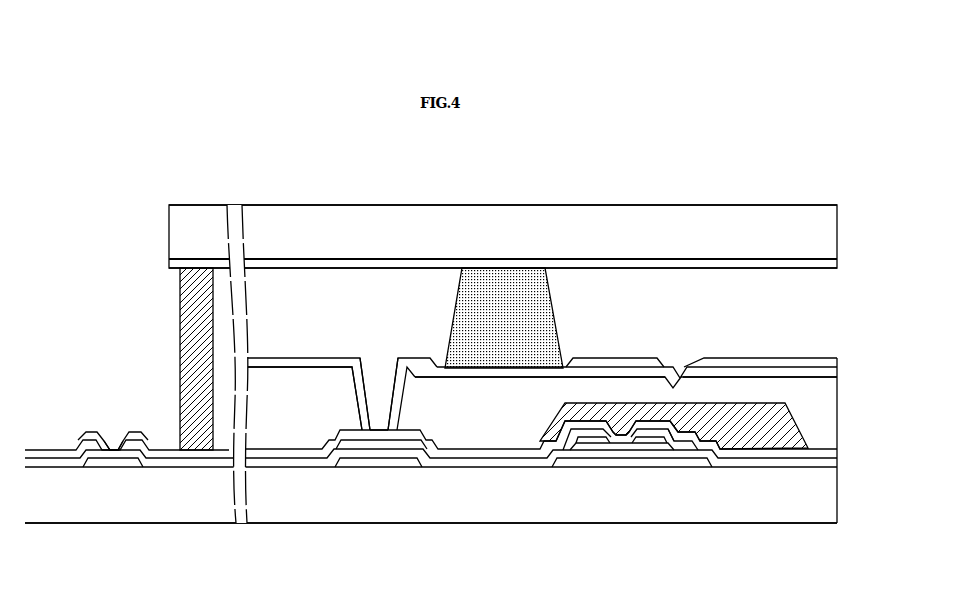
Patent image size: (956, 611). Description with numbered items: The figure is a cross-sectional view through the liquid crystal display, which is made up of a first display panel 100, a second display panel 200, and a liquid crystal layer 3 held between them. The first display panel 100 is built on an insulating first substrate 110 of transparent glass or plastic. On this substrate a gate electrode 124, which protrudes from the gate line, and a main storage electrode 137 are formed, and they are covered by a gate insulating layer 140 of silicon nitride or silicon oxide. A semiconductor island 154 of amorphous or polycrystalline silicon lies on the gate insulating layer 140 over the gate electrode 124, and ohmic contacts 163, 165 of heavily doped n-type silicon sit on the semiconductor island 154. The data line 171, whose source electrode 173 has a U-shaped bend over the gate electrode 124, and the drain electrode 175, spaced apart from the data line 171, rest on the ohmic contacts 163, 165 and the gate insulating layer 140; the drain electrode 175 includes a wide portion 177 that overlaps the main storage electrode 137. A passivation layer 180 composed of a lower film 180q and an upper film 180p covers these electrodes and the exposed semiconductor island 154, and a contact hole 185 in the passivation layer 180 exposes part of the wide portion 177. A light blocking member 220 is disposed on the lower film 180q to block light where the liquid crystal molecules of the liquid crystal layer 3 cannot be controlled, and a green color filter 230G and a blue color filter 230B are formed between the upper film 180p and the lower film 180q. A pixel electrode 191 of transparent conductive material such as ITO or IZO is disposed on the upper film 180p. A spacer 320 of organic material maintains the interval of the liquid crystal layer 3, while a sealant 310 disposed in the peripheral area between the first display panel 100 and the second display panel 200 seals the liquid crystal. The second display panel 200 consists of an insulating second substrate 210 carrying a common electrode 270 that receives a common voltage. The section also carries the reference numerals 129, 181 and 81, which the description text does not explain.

The liquid crystal layer 3 is at (842, 270).
The contact assistant 81 is at (134, 436).
The first display panel 100 is at (842, 520).
The insulating first substrate 110 is at (288, 500).
The gate electrode 124 is at (596, 461).
The gate pad 129 is at (113, 465).
The main storage electrode 137 is at (353, 462).
The gate insulating layer 140 is at (467, 459).
The semiconductor island 154 is at (609, 442).
The ohmic contact 163 is at (624, 437).
The ohmic contact 165 is at (580, 438).
The data line 171 is at (680, 441).
The source electrode 173 is at (643, 431).
The drain electrode 175 is at (568, 436).
The wide portion 177 is at (398, 443).
The passivation layer 180 is at (758, 317).
The upper film 180p is at (765, 370).
The lower film 180q is at (822, 450).
The contact hole 181 is at (112, 447).
The contact hole 185 is at (358, 392).
The pixel electrode 191 is at (615, 360).
The second display panel 200 is at (842, 205).
The insulating second substrate 210 is at (707, 223).
The light blocking member 220 is at (765, 433).
The green color filter 230G is at (432, 392).
The blue color filter 230B is at (677, 395).
The common electrode 270 is at (642, 263).
The sealant 310 is at (188, 318).
The spacer 320 is at (502, 283).